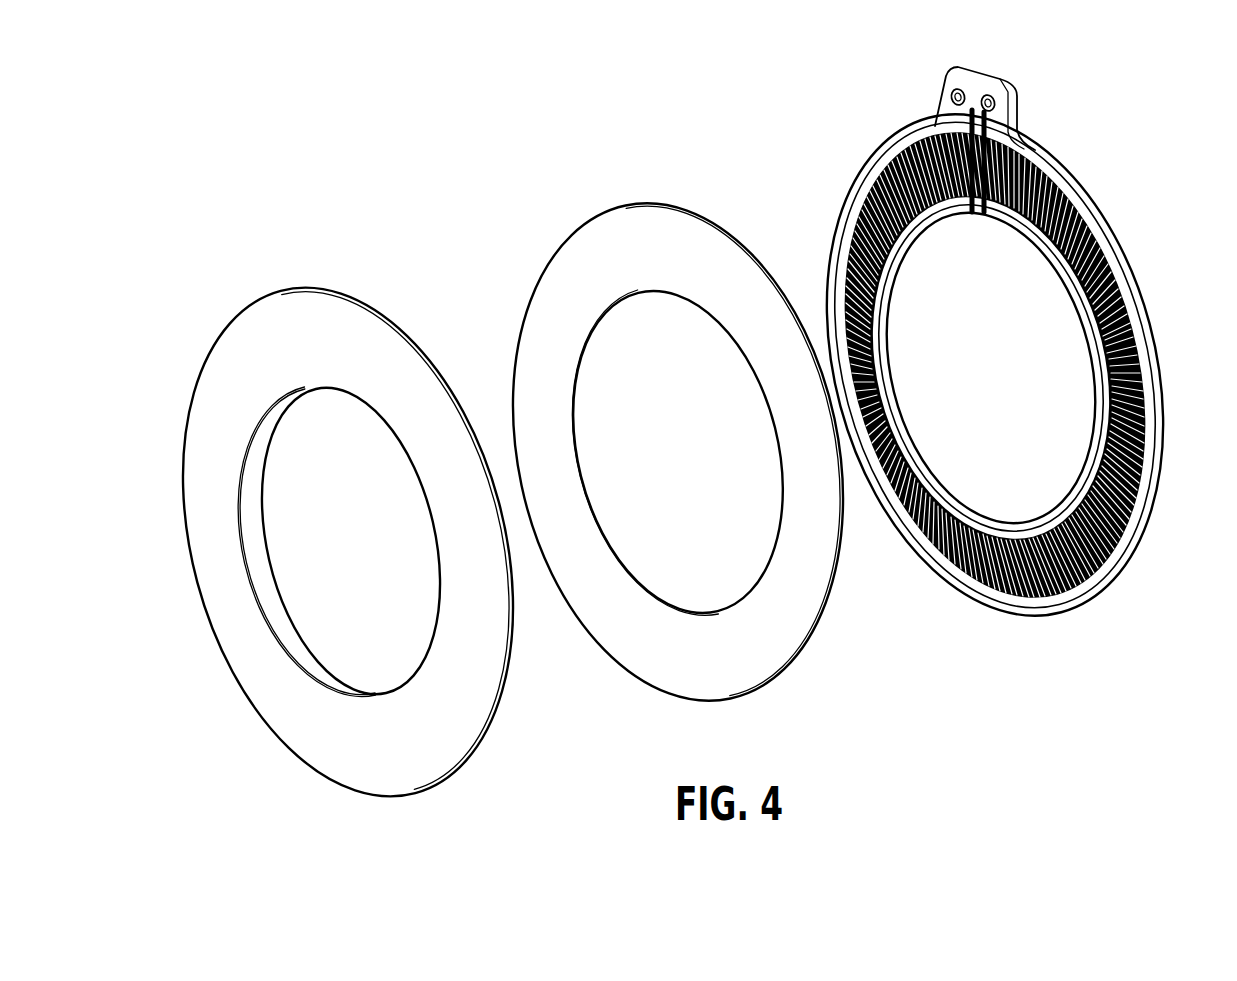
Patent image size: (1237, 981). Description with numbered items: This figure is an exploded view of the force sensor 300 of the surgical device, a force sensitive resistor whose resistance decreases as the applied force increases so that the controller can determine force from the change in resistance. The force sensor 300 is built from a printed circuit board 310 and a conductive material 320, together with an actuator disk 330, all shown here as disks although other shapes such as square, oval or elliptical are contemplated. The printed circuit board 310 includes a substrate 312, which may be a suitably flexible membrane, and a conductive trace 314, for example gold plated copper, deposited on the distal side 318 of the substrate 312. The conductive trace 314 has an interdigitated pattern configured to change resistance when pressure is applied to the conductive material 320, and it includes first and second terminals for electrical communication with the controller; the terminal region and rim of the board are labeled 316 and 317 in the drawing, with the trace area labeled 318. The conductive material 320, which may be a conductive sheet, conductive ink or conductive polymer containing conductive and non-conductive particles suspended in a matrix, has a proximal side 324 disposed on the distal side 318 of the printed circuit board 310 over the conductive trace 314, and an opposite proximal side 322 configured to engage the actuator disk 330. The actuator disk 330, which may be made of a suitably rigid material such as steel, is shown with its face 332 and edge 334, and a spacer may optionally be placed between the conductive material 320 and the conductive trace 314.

The force sensor 300 is at (298, 195).
The printed circuit board 310 is at (1033, 147).
The substrate 312 is at (1138, 313).
The conductive trace 314 is at (995, 95).
The electrical terminal 316 is at (952, 90).
The rim of heater 317 is at (1162, 472).
The distal side 318 is at (1102, 580).
The conductive material 320 is at (633, 207).
The proximal side 322 is at (562, 257).
The proximal side 324 is at (700, 217).
The actuator disk 330 is at (349, 298).
The face of mounting ring 332 is at (243, 327).
The edge of mounting ring 334 is at (388, 303).